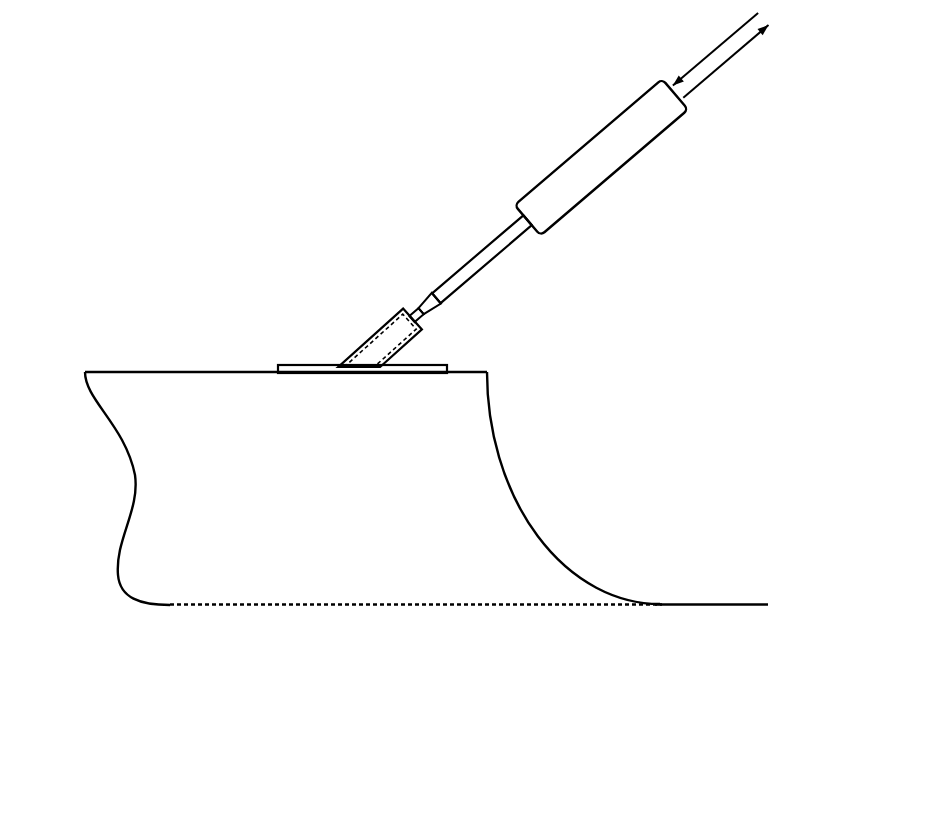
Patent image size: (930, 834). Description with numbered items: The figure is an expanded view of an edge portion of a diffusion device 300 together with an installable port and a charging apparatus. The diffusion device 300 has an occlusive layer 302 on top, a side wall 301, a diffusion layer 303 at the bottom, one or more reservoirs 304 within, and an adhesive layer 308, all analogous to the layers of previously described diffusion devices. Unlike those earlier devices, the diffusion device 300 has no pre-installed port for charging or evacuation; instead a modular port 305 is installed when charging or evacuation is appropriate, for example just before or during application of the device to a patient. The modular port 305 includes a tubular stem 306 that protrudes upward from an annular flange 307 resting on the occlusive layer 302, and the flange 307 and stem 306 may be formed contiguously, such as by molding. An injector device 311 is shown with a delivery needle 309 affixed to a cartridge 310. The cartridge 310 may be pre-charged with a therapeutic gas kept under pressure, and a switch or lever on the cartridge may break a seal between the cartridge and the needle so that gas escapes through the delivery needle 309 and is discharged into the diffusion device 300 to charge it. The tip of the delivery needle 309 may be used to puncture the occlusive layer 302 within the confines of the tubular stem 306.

The diffusion device 300 is at (236, 163).
The side wall 301 is at (508, 475).
The occlusive layer 302 is at (220, 372).
The diffusion layer 303 is at (318, 604).
The reservoir 304 is at (492, 552).
The modular port 305 is at (437, 347).
The tubular stem 306 is at (363, 342).
The annular flange 307 is at (303, 373).
The adhesive layer 308 is at (675, 604).
The delivery needle 309 is at (447, 283).
The cartridge 310 is at (598, 155).
The injector device 311 is at (612, 217).